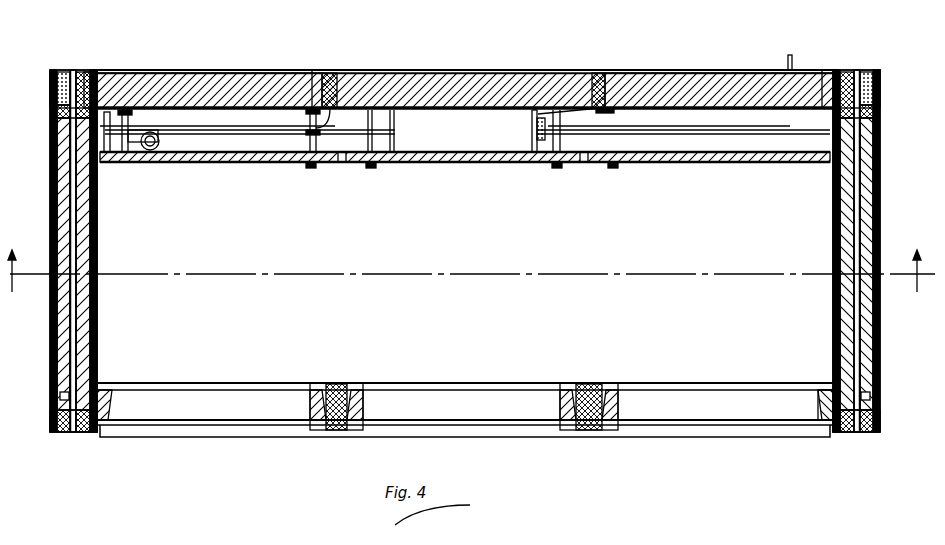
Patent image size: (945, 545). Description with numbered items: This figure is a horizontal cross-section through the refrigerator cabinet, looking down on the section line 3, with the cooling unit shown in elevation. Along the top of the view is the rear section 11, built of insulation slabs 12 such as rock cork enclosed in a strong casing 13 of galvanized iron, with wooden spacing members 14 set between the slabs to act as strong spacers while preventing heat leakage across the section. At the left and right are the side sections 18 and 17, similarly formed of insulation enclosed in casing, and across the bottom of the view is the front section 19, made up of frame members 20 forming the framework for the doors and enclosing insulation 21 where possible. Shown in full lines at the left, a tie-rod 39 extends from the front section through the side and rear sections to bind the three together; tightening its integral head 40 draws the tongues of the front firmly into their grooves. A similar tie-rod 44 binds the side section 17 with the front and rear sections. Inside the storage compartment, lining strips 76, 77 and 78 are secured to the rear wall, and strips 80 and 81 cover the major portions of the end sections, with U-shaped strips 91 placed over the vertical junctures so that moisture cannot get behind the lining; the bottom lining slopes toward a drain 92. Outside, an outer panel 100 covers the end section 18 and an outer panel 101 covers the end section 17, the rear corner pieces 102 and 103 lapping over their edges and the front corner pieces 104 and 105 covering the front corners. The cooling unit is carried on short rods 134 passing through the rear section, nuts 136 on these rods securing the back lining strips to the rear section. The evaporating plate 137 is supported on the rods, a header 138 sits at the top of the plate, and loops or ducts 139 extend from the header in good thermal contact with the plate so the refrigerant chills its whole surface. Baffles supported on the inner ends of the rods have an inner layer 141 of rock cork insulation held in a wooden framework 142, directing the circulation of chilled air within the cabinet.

The section line 3 is at (469, 286).
The rear section 11 is at (452, 80).
The insulation slabs 12 is at (648, 82).
The casing 13 is at (283, 100).
The spacing members 14 is at (90, 74).
The side section 17 is at (880, 206).
The side section 18 is at (50, 155).
The front section 19 is at (836, 430).
The frame members 20 is at (580, 430).
The insulation 21 is at (336, 430).
The tie-rod 39 is at (70, 335).
The head 40 is at (70, 432).
The tie-rods 44 is at (855, 184).
The lining strip 76 is at (230, 134).
The lining strip 77 is at (390, 150).
The lining strip 78 is at (726, 134).
The lining strip 80 is at (98, 220).
The lining strip 81 is at (835, 220).
The U-shaped strips 91 is at (112, 152).
The drain 92 is at (160, 150).
The outer panel 100 is at (60, 222).
The outer panel 101 is at (880, 236).
The rear corner piece 102 is at (50, 80).
The rear corner piece 103 is at (880, 92).
The front corner piece 104 is at (52, 426).
The front corner piece 105 is at (880, 430).
The short rods 134 is at (340, 108).
The nuts 136 is at (312, 108).
The evaporating plate 137 is at (272, 150).
The header 138 is at (460, 148).
The loops or ducts 139 is at (298, 150).
The inner layer of insulation 141 is at (528, 152).
The wooden framework 142 is at (556, 164).